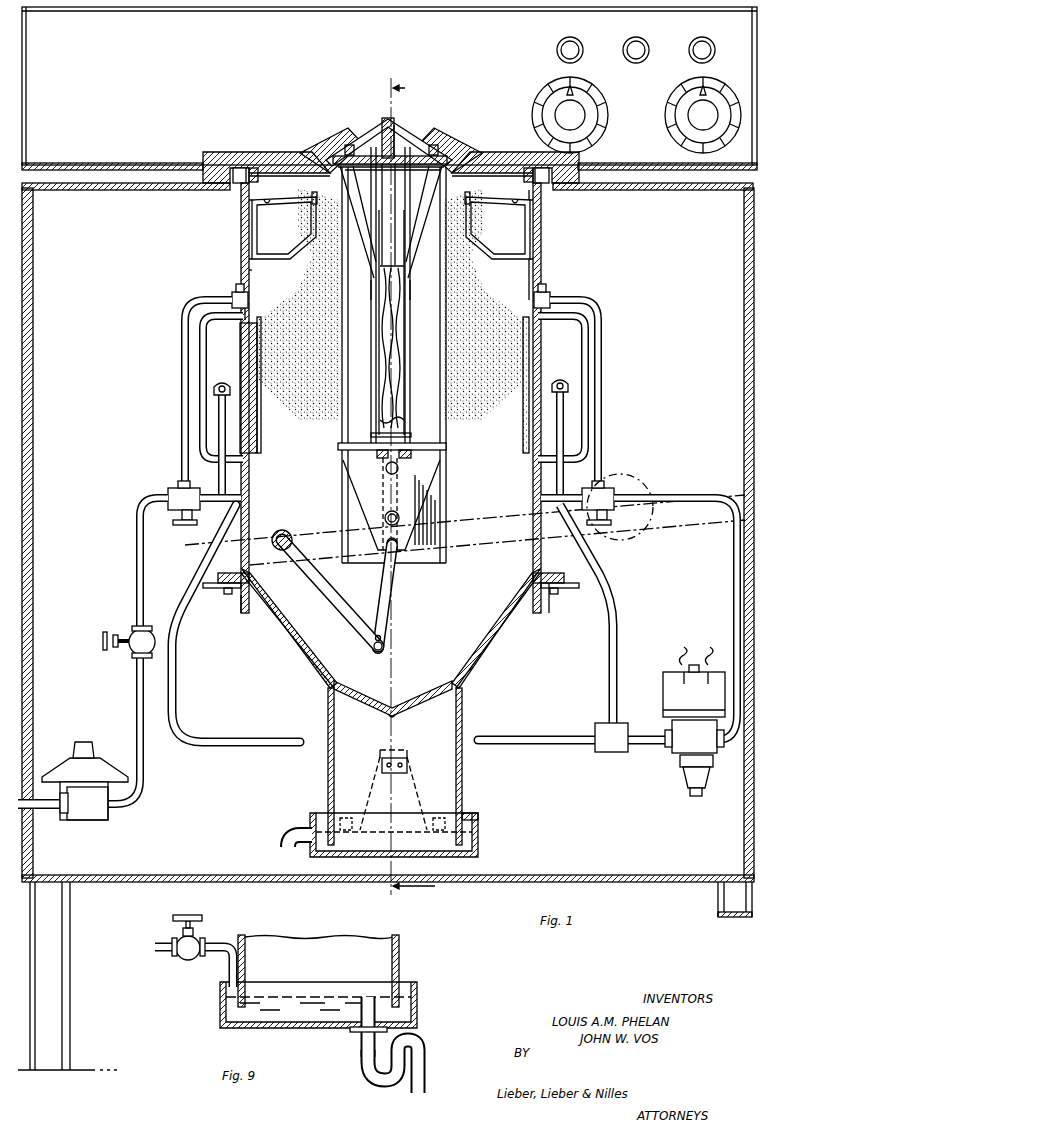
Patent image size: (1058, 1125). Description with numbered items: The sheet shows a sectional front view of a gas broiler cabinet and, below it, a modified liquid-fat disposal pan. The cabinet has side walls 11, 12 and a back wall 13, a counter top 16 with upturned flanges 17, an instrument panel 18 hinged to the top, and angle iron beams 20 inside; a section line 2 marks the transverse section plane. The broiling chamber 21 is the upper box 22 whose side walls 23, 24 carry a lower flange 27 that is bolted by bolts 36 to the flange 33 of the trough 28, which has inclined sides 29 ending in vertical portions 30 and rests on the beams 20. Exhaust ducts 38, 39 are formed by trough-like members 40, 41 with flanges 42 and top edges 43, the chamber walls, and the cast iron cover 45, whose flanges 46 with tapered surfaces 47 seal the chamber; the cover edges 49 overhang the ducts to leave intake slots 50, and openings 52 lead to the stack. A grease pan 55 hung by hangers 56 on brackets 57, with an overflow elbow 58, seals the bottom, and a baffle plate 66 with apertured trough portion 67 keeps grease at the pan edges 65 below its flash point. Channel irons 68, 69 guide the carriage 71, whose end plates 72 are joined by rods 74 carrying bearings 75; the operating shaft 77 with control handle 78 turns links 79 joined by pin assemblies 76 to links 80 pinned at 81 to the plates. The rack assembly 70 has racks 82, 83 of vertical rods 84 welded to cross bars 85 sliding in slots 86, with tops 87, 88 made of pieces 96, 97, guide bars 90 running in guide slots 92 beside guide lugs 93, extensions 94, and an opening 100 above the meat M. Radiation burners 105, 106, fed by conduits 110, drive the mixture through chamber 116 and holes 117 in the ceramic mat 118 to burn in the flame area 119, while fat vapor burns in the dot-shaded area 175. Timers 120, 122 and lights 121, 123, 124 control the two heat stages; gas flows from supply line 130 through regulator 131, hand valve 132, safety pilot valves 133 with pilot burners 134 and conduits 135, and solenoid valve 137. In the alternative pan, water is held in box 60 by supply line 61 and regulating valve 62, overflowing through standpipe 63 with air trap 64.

In FIG. 1, the section line 2- 2 is at (419, 483).
In FIG. 1, the side wall 11 is at (33, 435).
In FIG. 1, the side wall 12 is at (744, 425).
In FIG. 1, the back wall 13 is at (682, 293).
In FIG. 1, the top 16 is at (150, 190).
In FIG. 1, the upwardly turned flanges 17 is at (238, 184).
In FIG. 1, the instrument panel 18 is at (180, 75).
In FIG. 1, the angle iron beams 20 is at (241, 612).
In FIG. 1, the broiling chamber 21 is at (533, 290).
In FIG. 1, the upper box 22 is at (541, 262).
In FIG. 1, the side wall 23 is at (241, 247).
In FIG. 1, the side wall 24 is at (541, 237).
In FIG. 1, the outwardly extending flange 27 is at (218, 573).
In FIG. 1, the bottom trough-like structure 28 is at (470, 692).
In FIG. 9, the bottom trough-like structure 28 is at (399, 960).
In FIG. 1, the inclined sides 29 is at (295, 653).
In FIG. 1, the vertical portions 30 is at (328, 772).
In FIG. 1, the flange 33 is at (212, 588).
In FIG. 1, the bolts 36 is at (228, 594).
In FIG. 1, the exhaust duct 38 is at (265, 221).
In FIG. 1, the exhaust duct 39 is at (557, 193).
In FIG. 1, the trough-like member 40 is at (302, 258).
In FIG. 1, the trough-like member 41 is at (497, 258).
In FIG. 1, the flange 42 is at (241, 270).
In FIG. 1, the top edges 43 is at (387, 194).
In FIG. 1, the cover 45 is at (270, 152).
In FIG. 1, the downwardly extending flanges 46 is at (254, 167).
In FIG. 1, the tapered surfaces 47 is at (246, 166).
In FIG. 1, the downwardly extending edges 49 is at (322, 182).
In FIG. 1, the intake slot 50 is at (268, 221).
In FIG. 1, the opening 52 is at (386, 194).
In FIG. 1, the grease pan 55 is at (478, 838).
In FIG. 1, the hangers 56 is at (422, 792).
In FIG. 1, the brackets 57 is at (397, 755).
In FIG. 1, the overflow elbow 58 is at (286, 823).
In FIG. 1, the outer edges 65 is at (472, 813).
In FIG. 1, the baffle plate 66 is at (425, 692).
In FIG. 1, the trough portion 67 is at (380, 712).
In FIG. 1, the channel iron 68 is at (342, 400).
In FIG. 1, the channel iron 69 is at (446, 400).
In FIG. 1, the food rack assembly 70 is at (379, 356).
In FIG. 1, the carriage 71 is at (352, 478).
In FIG. 1, the end plate 72 is at (432, 486).
In FIG. 1, the carriage rods 74 is at (396, 512).
In FIG. 1, the bearings 75 is at (383, 496).
In FIG. 1, the pin and cotter key assembly 76 is at (377, 652).
In FIG. 1, the carriage operating shaft 77 is at (276, 532).
In FIG. 1, the control handle 78 is at (504, 535).
In FIG. 1, the link 79 is at (340, 608).
In FIG. 1, the link 80 is at (386, 610).
In FIG. 1, the pin and cotter key assembly 81 is at (396, 548).
In FIG. 1, the rack 82 is at (371, 298).
In FIG. 1, the rack 83 is at (410, 298).
In FIG. 1, the vertical rods 84 is at (372, 147).
In FIG. 1, the cross bars 85 is at (380, 458).
In FIG. 1, the slots 86 is at (338, 452).
In FIG. 1, the top 87 is at (350, 145).
In FIG. 1, the top 88 is at (428, 152).
In FIG. 1, the rack guide bar 90 is at (349, 170).
In FIG. 1, the guide slots 92 is at (418, 214).
In FIG. 1, the guide lugs 93 is at (390, 214).
In FIG. 1, the extensions 94 is at (410, 432).
In FIG. 1, the sheet metal piece 96 is at (396, 140).
In FIG. 1, the sheet metal piece 97 is at (410, 130).
In FIG. 1, the opening 100 is at (318, 152).
In FIG. 1, the radiation gas burner 105 is at (210, 352).
In FIG. 1, the radiation gas burner 106 is at (570, 360).
In FIG. 1, the supply conduit 110 is at (232, 737).
In FIG. 1, the chamber 116 is at (240, 366).
In FIG. 1, the tiny holes 117 is at (242, 350).
In FIG. 1, the ceramic mat 118 is at (257, 422).
In FIG. 1, the shaded area 119 is at (257, 445).
In FIG. 1, the timer 120 is at (608, 108).
In FIG. 1, the high fire indicator light 121 is at (570, 41).
In FIG. 1, the timer 122 is at (672, 134).
In FIG. 1, the low fire indicator light 123 is at (702, 41).
In FIG. 1, the ready light 124 is at (636, 41).
In FIG. 1, the gas supply line 130 is at (136, 562).
In FIG. 1, the pressure regulator 131 is at (98, 806).
In FIG. 1, the hand valve 132 is at (138, 650).
In FIG. 1, the automatic safety pilot valves 133 is at (176, 488).
In FIG. 1, the pilot burner 134 is at (232, 298).
In FIG. 1, the conduit 135 is at (181, 400).
In FIG. 1, the solenoid operated valve 137 is at (686, 742).
In FIG. 1, the dot-shaded area 175 is at (290, 366).
In FIG. 1, the meat M is at (390, 330).
In FIG. 9, the box 60 is at (230, 1030).
In FIG. 9, the supply line 61 is at (216, 937).
In FIG. 9, the regulating valve 62 is at (186, 960).
In FIG. 9, the overflow standpipe 63 is at (360, 1050).
In FIG. 9, the air trap 64 is at (372, 1080).